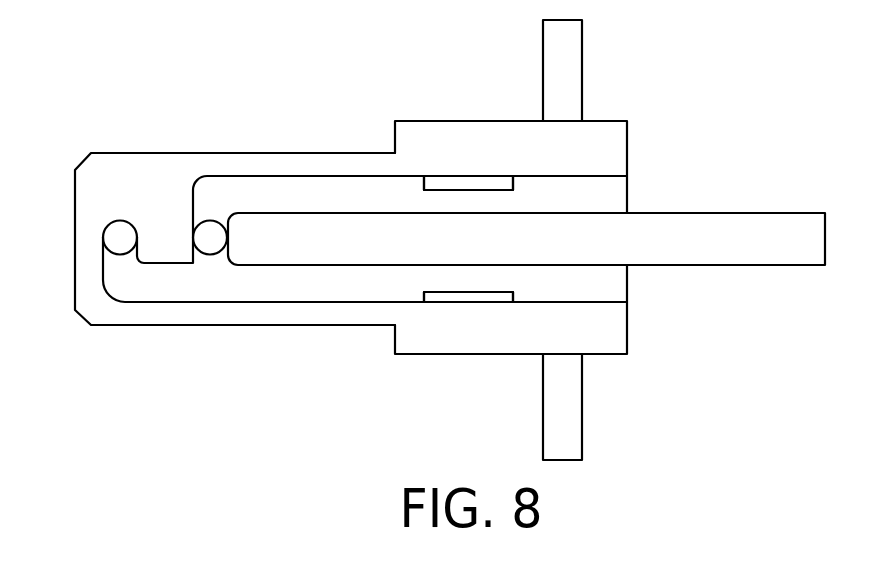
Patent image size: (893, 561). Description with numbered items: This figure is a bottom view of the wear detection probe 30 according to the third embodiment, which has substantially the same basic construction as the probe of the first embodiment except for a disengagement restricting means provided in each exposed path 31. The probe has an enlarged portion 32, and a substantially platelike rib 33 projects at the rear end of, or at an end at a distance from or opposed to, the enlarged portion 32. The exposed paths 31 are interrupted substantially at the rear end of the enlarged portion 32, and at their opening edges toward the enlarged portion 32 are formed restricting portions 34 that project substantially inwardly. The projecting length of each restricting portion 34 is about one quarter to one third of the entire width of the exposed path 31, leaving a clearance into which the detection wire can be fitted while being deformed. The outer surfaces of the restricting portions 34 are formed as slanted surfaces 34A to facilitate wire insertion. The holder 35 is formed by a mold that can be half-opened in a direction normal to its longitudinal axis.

The wear detection probe 30 is at (450, 238).
The exposed path 31 is at (273, 176).
The enlarged portion 32 is at (462, 137).
The rib 33 is at (756, 213).
The restricting portion 34 is at (430, 189).
The slanted surface 34A is at (442, 180).
The holder 35 is at (210, 93).